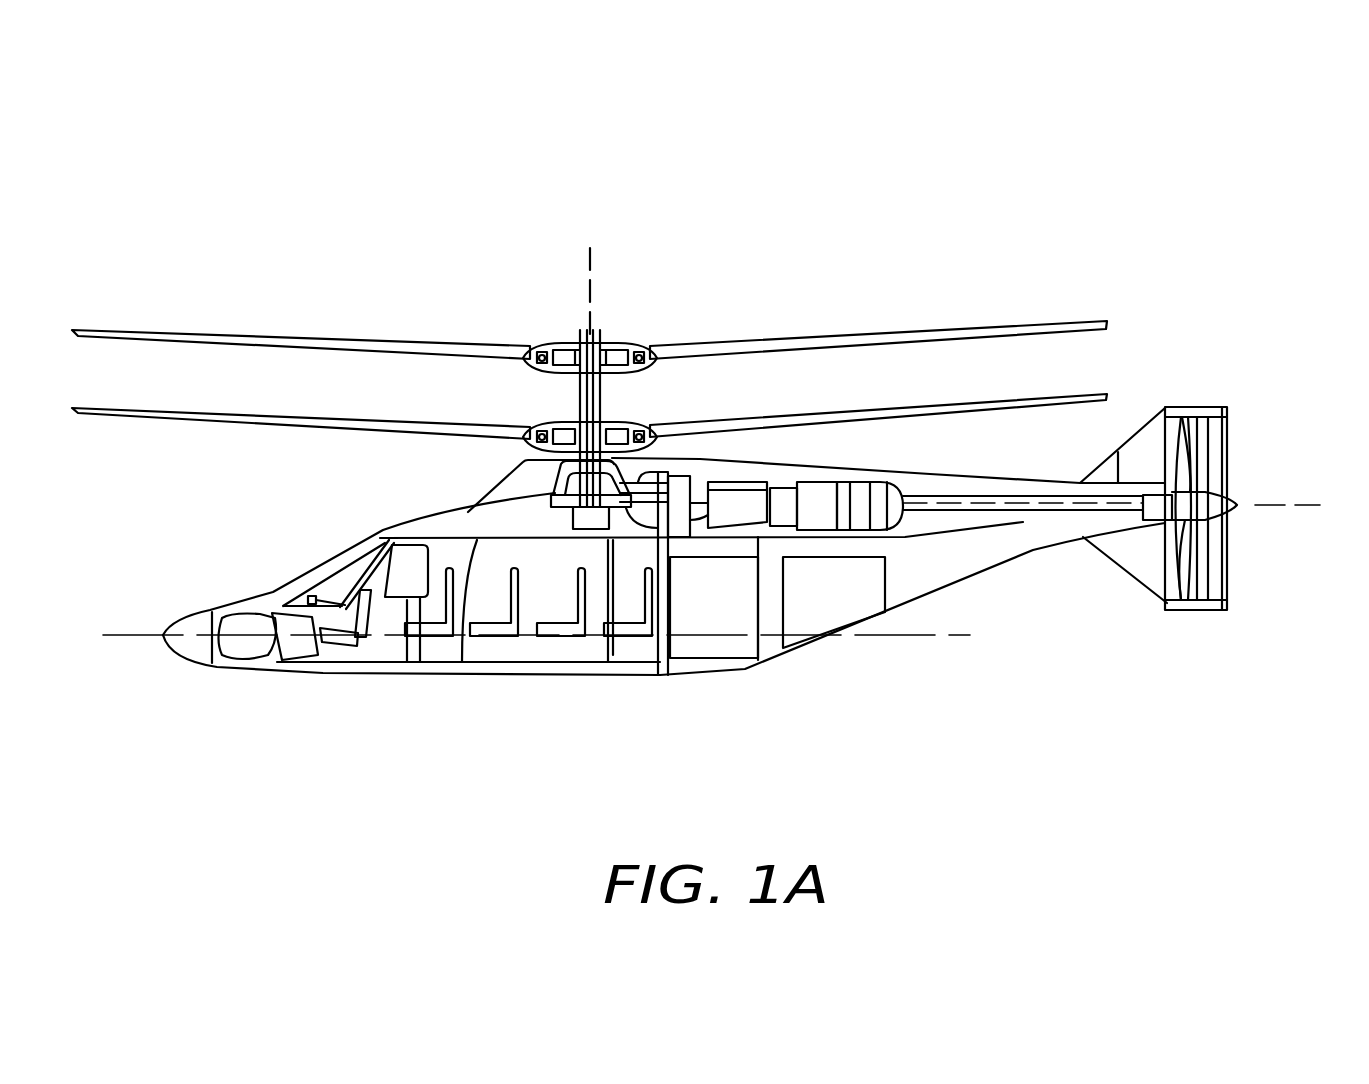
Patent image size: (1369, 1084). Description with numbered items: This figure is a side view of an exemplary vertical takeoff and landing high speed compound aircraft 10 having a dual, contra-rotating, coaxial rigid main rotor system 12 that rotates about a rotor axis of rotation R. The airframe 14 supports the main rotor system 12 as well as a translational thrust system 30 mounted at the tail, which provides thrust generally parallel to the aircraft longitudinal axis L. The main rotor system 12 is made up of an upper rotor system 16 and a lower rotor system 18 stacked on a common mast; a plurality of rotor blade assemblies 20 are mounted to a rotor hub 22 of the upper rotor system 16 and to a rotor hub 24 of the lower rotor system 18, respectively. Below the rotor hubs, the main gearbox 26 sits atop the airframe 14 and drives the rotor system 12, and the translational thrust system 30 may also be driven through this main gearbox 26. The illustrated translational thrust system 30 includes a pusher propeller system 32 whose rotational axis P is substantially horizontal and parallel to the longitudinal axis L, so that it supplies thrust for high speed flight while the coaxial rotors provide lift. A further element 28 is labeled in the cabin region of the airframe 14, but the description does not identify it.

The rotary wing aircraft 10 is at (883, 212).
The main rotor system 12 is at (652, 339).
The airframe 14 is at (388, 525).
The upper rotor system 16 is at (561, 340).
The lower rotor system 18 is at (634, 416).
The rotor blade assemblies 20 is at (778, 342).
The rotor hub 22 is at (617, 343).
The rotor hub 24 is at (565, 418).
The main gearbox 26 is at (556, 483).
The cabin 28 is at (481, 655).
The translational thrust system 30 is at (1244, 421).
The pusher propeller system 32 is at (1293, 590).